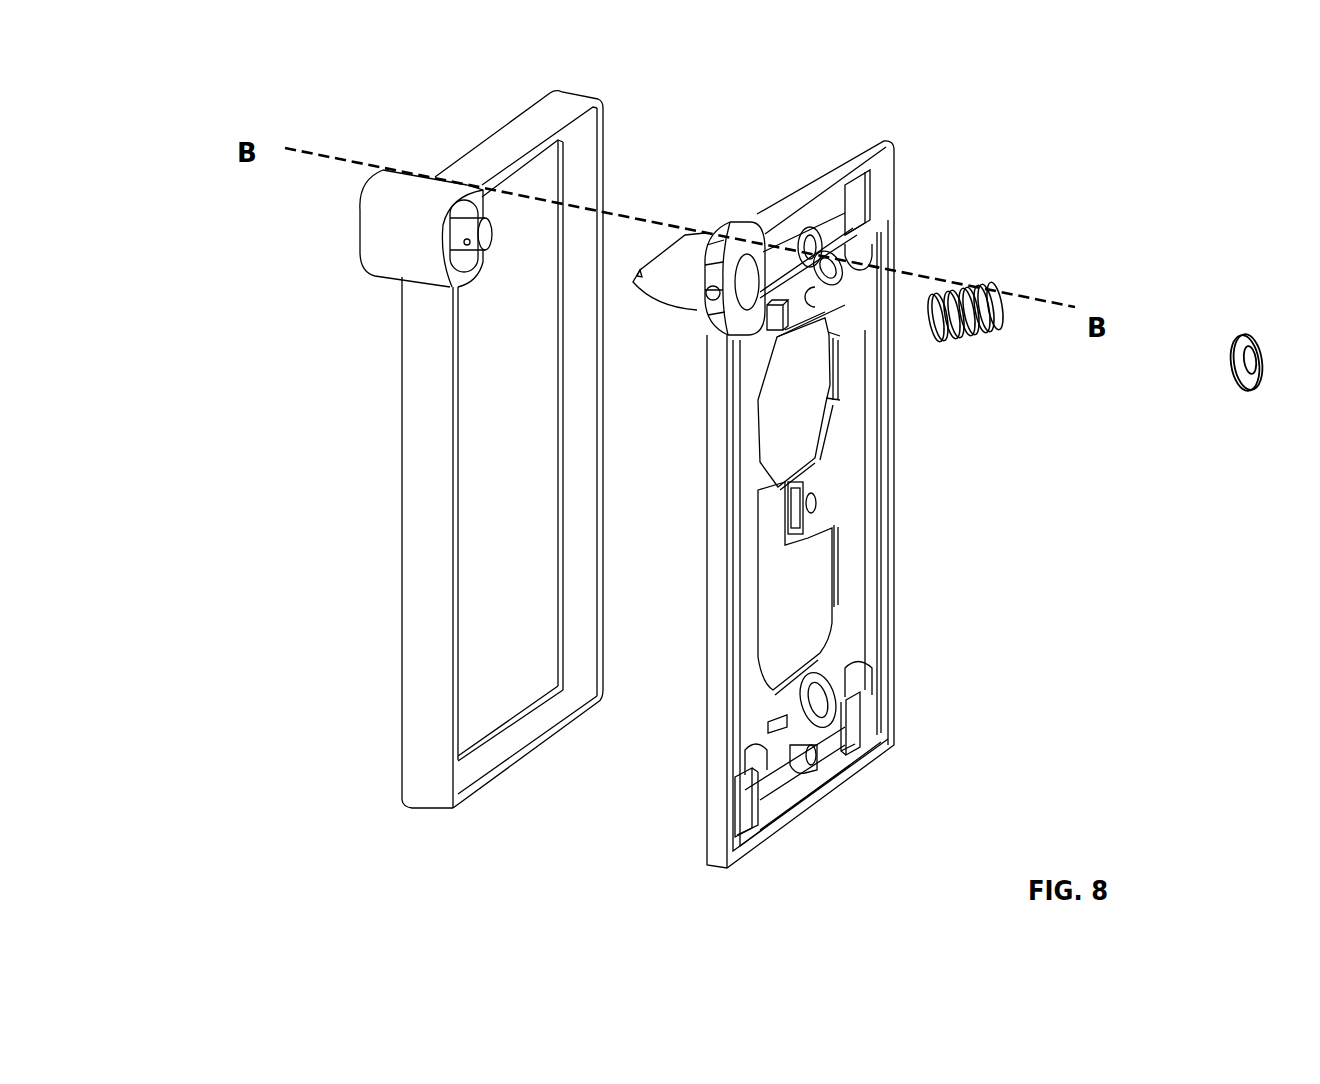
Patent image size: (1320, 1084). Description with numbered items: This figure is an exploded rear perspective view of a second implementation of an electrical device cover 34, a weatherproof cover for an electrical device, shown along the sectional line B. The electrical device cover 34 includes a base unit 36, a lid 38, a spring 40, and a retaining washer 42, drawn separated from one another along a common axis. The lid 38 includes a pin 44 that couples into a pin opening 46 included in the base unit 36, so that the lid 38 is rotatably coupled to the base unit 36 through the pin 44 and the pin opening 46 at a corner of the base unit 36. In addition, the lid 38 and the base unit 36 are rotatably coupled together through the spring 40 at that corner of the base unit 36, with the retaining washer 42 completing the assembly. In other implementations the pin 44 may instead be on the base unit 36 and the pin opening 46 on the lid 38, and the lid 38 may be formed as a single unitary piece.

The electrical device cover 34 is at (312, 414).
The base unit 36 is at (713, 725).
The lid 38 is at (412, 636).
The spring 40 is at (961, 342).
The retaining washer 42 is at (1235, 368).
The pin 44 is at (462, 240).
The pin opening 46 is at (748, 270).